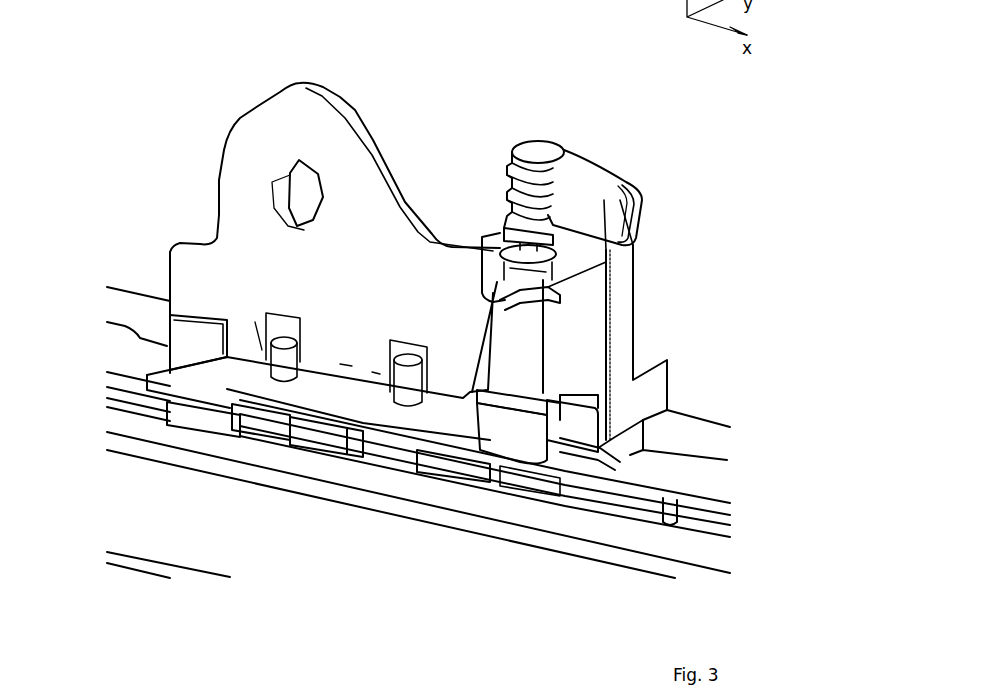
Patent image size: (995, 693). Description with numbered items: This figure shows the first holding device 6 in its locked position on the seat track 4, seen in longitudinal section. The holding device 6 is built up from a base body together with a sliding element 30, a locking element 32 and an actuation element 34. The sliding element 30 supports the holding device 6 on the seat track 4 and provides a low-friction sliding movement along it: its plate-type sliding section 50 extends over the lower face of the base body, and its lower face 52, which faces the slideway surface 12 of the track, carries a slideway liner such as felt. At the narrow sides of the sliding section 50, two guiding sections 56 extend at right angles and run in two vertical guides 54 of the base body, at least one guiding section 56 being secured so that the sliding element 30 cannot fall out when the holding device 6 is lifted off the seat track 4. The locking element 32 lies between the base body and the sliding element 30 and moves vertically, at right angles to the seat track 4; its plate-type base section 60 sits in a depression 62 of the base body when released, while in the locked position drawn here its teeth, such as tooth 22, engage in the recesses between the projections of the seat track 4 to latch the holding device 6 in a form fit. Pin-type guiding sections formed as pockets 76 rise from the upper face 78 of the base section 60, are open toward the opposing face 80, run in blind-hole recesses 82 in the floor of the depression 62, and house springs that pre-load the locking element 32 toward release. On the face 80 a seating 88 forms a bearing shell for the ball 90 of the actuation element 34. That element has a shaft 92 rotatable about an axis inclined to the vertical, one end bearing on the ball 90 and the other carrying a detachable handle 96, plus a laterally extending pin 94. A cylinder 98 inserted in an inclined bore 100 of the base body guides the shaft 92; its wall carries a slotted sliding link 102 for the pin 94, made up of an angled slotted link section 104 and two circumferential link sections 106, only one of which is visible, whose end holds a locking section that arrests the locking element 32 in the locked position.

The seat track 4 is at (127, 413).
The holding device 6 is at (235, 125).
The slideway surface 12 is at (124, 352).
The tooth 22 is at (197, 413).
The sliding element 30 is at (610, 465).
The locking element 32 is at (347, 372).
The actuation element 34 is at (555, 133).
The sliding section 50 is at (556, 452).
The lower face 52 is at (628, 458).
The guide 54 is at (215, 321).
The guiding section 56 is at (197, 344).
The base section 60 is at (273, 397).
The depression 62 is at (366, 390).
The pocket 76 is at (263, 347).
The upper face 78 is at (374, 414).
The opposing face 80 is at (288, 386).
The recess 82 is at (268, 323).
The seating 88 is at (513, 423).
The ball 90 is at (535, 387).
The shaft 92 is at (560, 237).
The pin 94 is at (471, 393).
The handle 96 is at (580, 202).
The cylinder 98 is at (515, 363).
The bore 100 is at (533, 352).
The slotted sliding link 102 is at (550, 287).
The slotted link section 104 is at (558, 298).
The link section 106 is at (483, 393).